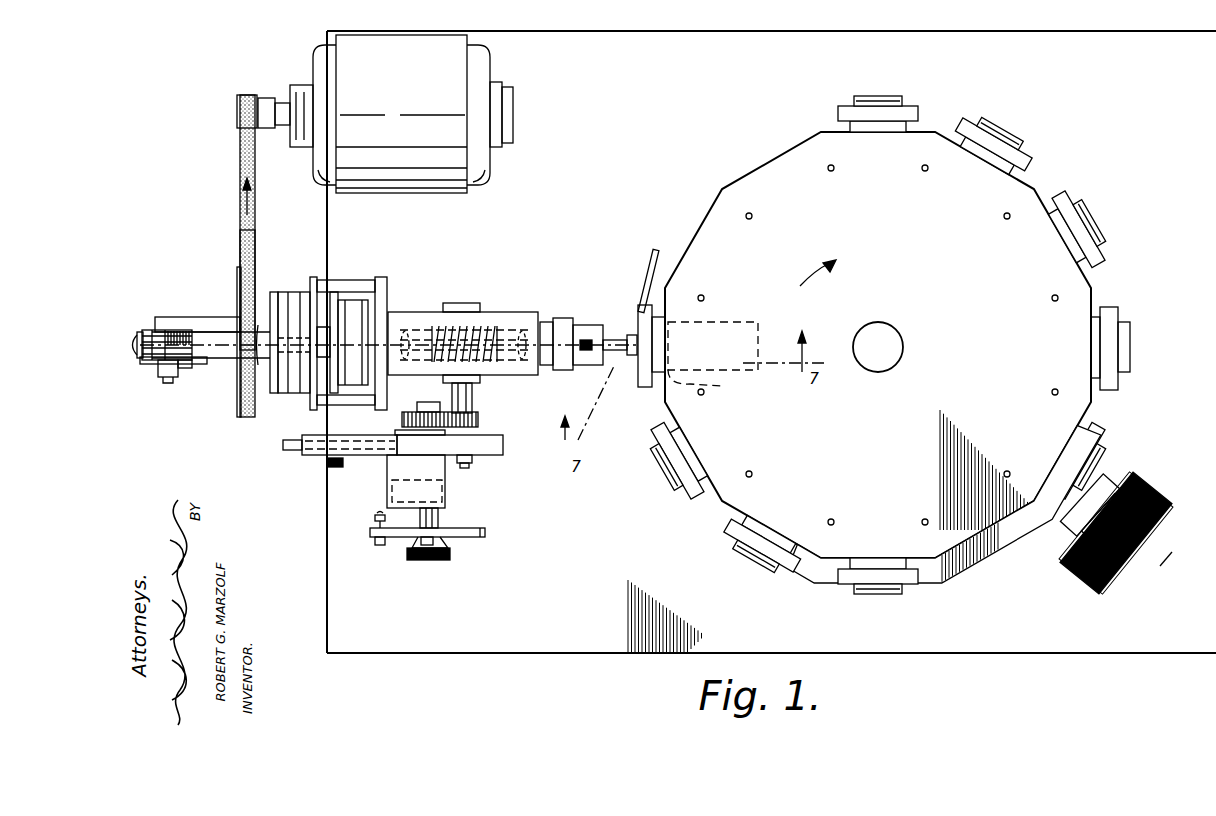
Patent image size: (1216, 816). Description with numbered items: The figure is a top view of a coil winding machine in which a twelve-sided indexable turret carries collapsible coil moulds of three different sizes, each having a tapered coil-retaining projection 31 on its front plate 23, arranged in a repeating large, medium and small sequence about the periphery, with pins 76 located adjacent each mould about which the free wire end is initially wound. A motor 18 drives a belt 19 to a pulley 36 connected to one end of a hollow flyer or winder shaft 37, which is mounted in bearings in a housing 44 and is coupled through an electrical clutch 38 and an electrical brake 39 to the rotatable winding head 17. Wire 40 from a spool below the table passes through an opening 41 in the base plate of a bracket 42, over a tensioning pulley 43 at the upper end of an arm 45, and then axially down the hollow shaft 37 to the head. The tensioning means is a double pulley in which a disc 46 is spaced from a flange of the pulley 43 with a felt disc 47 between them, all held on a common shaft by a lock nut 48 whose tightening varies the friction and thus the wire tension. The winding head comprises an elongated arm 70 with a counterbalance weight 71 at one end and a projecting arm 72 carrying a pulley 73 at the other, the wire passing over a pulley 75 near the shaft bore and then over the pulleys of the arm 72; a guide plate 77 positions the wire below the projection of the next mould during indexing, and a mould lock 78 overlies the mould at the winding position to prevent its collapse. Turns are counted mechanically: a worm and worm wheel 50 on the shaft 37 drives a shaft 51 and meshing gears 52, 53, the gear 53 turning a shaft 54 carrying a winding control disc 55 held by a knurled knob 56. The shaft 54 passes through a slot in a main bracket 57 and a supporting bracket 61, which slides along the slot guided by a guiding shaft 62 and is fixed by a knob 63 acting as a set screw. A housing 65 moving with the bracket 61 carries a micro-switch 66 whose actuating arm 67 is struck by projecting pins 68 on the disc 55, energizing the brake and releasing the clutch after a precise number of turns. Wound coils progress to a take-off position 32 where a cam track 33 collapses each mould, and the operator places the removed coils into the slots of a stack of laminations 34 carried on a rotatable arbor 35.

The winding head 17 is at (634, 370).
The motor 18 is at (455, 61).
The belt 19 is at (240, 198).
The front plate 23 is at (1113, 343).
The coil-retaining projection 31 is at (1131, 354).
The take-off position 32 is at (1160, 570).
The cam surface or track 33 is at (940, 580).
The stack of laminations 34 is at (1150, 485).
The rotatable arbor 35 is at (1112, 490).
The pulley 36 is at (243, 270).
The flyer or winder shaft 37 is at (262, 400).
The electrical clutch 38 is at (290, 293).
The electrical brake 39 is at (362, 280).
The wire 40 is at (222, 332).
The opening 41 is at (145, 358).
The bracket 42 is at (145, 330).
The tensioning pulley 43 is at (172, 330).
The housing 44 is at (530, 312).
The arm 45 is at (190, 318).
The disc 46 is at (185, 368).
The felt disc 47 is at (205, 362).
The lock nut 48 is at (168, 383).
The worm and worm wheel 50 is at (466, 312).
The shaft 51 is at (472, 397).
The gear 52 is at (478, 418).
The gear 53 is at (400, 420).
The shaft 54 is at (485, 530).
The winding control disc 55 is at (486, 534).
The knurled knob 56 is at (435, 560).
The main bracket 57 is at (503, 438).
The supporting bracket 61 is at (432, 452).
The guiding shaft 62 is at (295, 448).
The knob 63 is at (332, 468).
The housing 65 is at (408, 466).
The micro-switch 66 is at (442, 492).
The actuating arm 67 is at (440, 515).
The projecting pins 68 is at (427, 516).
The elongated arm 70 is at (562, 318).
The counterbalance weight 71 is at (590, 325).
The horizontally projecting arm 72 is at (1030, 190).
The pulley 73 is at (640, 318).
The pulley 75 is at (590, 358).
The pins 76 is at (835, 170).
The guide plate 77 is at (648, 262).
The mould lock 78 is at (722, 385).